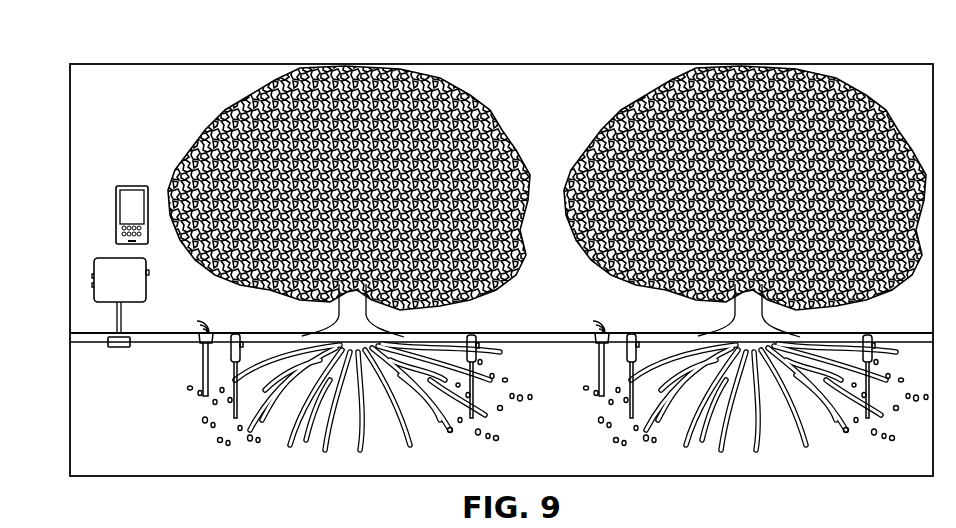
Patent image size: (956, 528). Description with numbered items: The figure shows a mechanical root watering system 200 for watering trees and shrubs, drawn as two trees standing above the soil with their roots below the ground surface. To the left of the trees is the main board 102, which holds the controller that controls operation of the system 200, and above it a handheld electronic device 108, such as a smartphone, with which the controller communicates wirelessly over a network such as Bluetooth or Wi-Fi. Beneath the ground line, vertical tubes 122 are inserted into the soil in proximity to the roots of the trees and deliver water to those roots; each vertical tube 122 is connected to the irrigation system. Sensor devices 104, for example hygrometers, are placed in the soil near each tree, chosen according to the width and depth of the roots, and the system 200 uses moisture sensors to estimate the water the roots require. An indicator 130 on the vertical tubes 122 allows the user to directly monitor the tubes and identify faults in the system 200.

The mechanical root watering system 200 is at (122, 49).
The main board 102 is at (107, 258).
The sensor device 104 is at (203, 370).
The handheld electronic device 108 is at (131, 186).
The vertical tube 122 is at (233, 398).
The indicator 130 is at (237, 334).